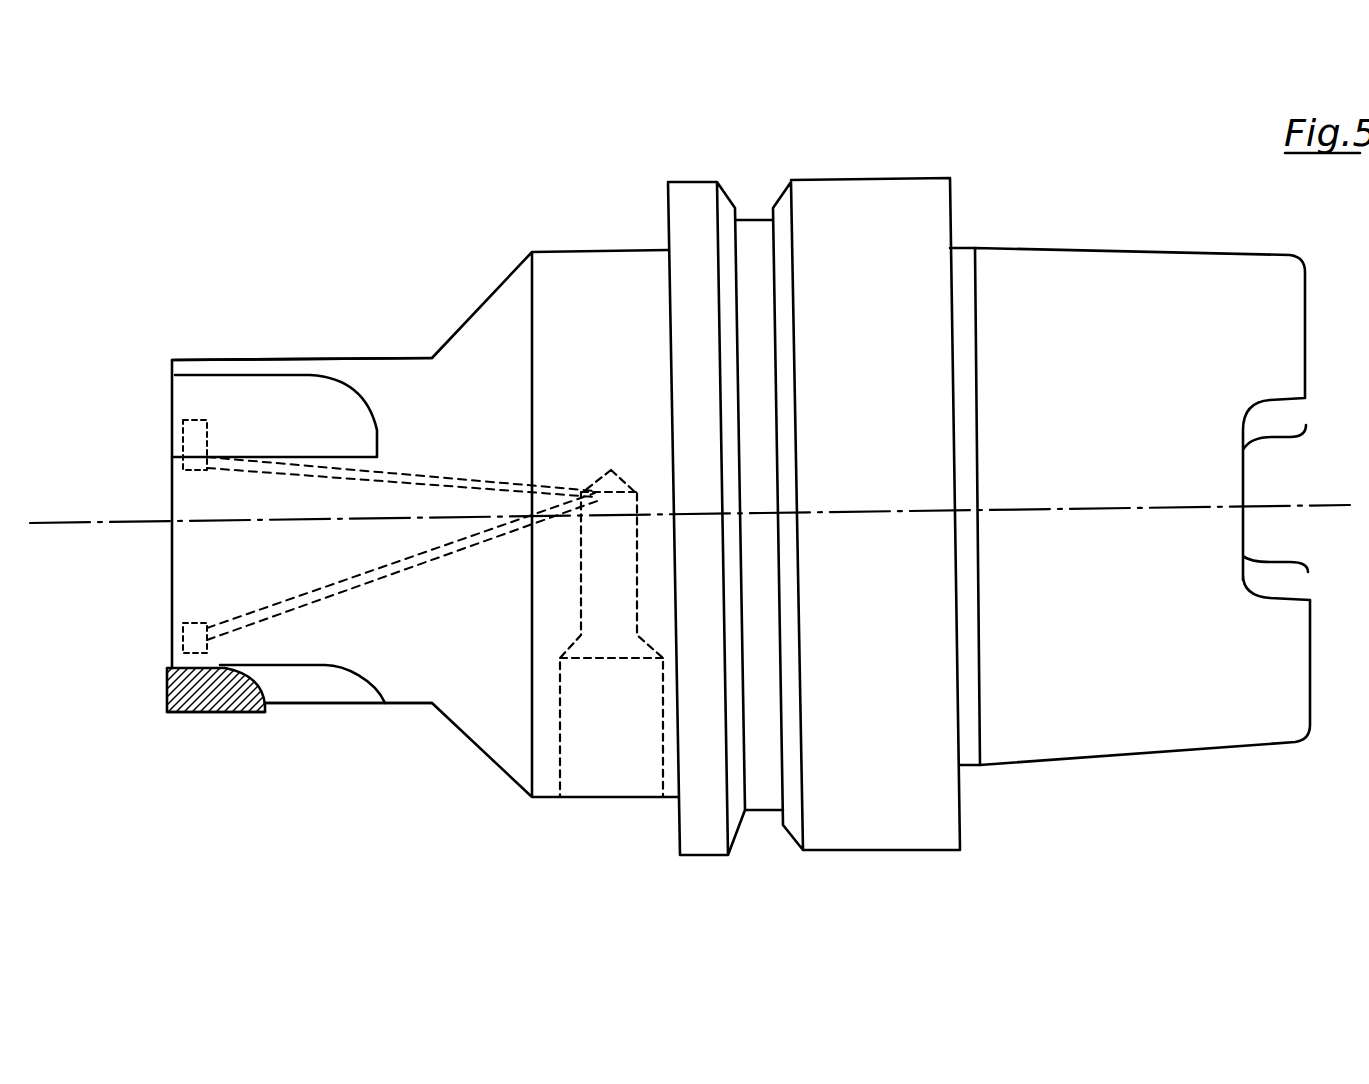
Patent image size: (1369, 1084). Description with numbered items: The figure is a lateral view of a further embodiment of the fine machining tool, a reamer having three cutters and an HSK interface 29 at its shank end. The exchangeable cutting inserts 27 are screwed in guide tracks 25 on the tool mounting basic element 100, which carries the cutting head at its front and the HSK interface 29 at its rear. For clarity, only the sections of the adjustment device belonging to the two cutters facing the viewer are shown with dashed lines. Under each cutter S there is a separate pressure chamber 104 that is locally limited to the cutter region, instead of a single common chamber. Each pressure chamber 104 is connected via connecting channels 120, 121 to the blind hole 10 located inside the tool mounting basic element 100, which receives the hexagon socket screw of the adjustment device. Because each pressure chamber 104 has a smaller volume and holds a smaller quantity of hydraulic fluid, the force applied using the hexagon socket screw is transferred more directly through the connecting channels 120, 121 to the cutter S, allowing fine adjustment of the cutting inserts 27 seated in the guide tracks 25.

The tool mounting basic element 100 is at (575, 360).
The connecting channel 120 is at (398, 478).
The connecting channel 121 is at (398, 563).
The guide track 25 is at (288, 412).
The pressure chamber 104 is at (180, 443).
The cutter S is at (195, 716).
The cutting insert 27 is at (245, 716).
The blind hole 10 is at (608, 757).
The HSK interface 29 is at (1152, 722).